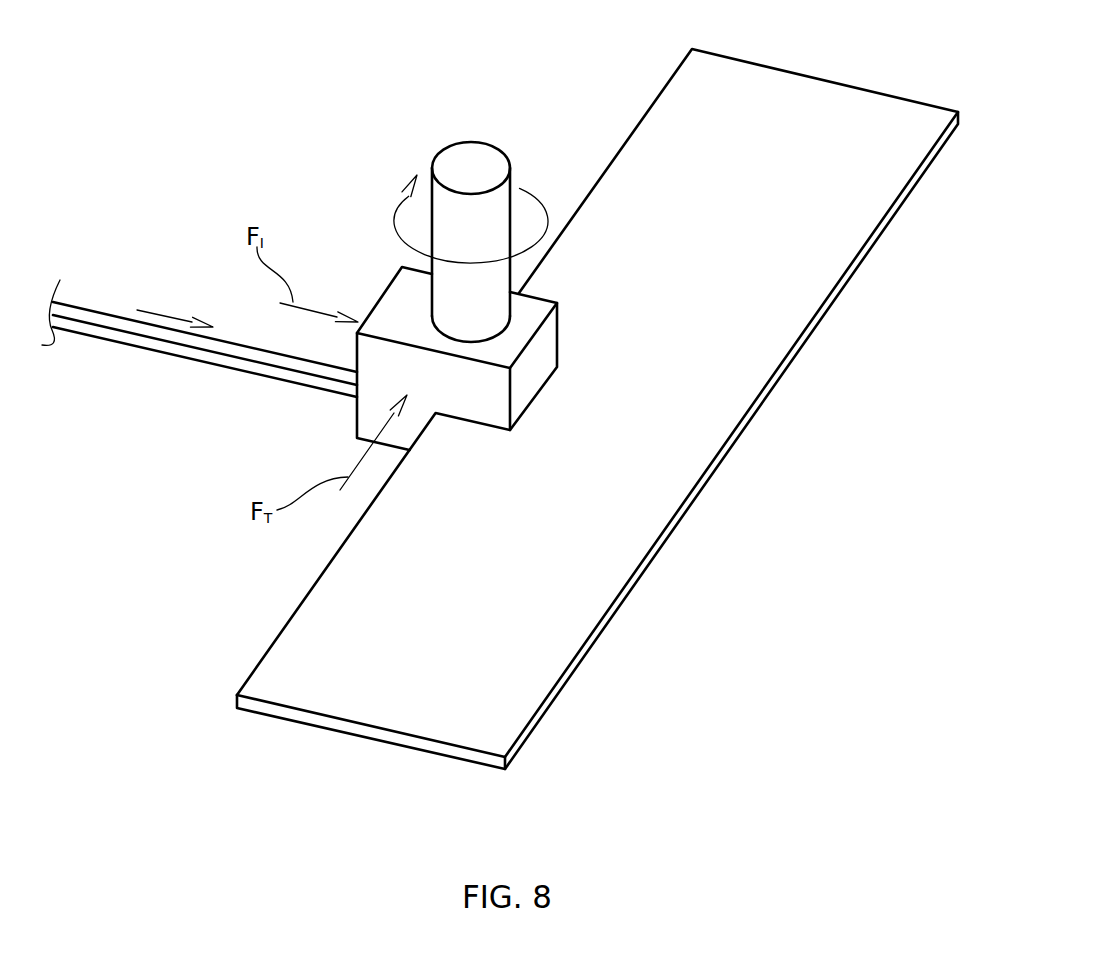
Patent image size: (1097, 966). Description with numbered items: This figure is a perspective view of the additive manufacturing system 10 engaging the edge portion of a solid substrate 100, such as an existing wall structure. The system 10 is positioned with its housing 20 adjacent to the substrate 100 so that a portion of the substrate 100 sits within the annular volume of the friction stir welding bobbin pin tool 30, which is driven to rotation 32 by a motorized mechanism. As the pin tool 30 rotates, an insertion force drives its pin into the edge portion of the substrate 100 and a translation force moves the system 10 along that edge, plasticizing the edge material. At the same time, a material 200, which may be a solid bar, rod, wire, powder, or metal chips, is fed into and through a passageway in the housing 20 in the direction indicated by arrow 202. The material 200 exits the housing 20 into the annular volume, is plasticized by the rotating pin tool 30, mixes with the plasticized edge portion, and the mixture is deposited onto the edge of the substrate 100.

The additive manufacturing system 10 is at (396, 273).
The housing 20 is at (352, 407).
The pin tool 30 is at (512, 178).
The rotation 32 is at (395, 214).
The substrate 100 is at (500, 677).
The material 200 is at (147, 345).
The arrow 202 is at (168, 316).